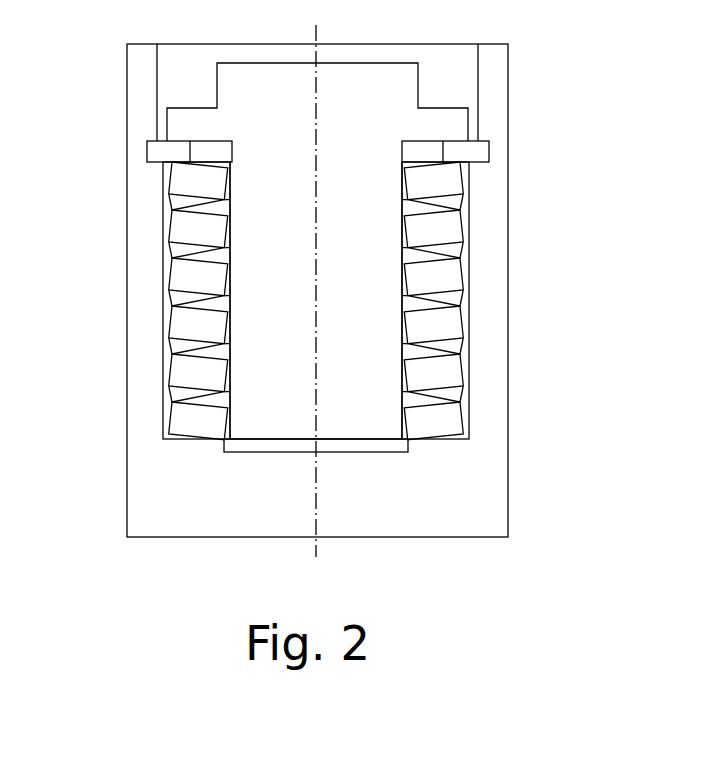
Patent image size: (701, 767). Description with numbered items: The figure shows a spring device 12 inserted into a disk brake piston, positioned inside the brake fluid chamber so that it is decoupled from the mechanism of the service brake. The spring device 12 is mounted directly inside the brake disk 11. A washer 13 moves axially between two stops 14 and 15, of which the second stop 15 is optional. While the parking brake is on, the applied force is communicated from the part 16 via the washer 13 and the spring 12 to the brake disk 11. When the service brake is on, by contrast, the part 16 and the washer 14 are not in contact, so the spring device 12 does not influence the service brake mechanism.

The brake disk 11 is at (495, 425).
The spring device 12 is at (450, 323).
The washer 13 is at (478, 150).
The stop 14 is at (152, 142).
The second stop 15 is at (168, 163).
The part 16 is at (255, 332).